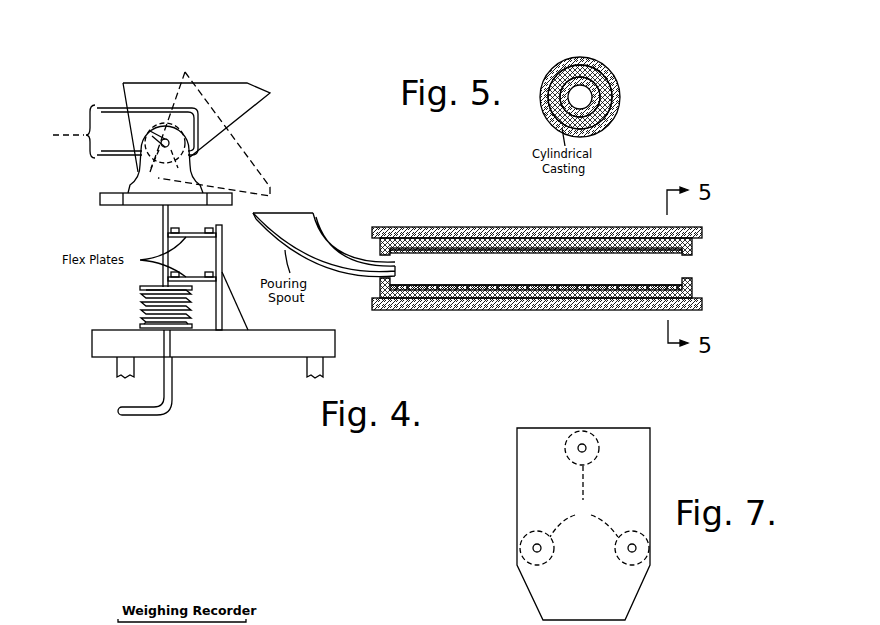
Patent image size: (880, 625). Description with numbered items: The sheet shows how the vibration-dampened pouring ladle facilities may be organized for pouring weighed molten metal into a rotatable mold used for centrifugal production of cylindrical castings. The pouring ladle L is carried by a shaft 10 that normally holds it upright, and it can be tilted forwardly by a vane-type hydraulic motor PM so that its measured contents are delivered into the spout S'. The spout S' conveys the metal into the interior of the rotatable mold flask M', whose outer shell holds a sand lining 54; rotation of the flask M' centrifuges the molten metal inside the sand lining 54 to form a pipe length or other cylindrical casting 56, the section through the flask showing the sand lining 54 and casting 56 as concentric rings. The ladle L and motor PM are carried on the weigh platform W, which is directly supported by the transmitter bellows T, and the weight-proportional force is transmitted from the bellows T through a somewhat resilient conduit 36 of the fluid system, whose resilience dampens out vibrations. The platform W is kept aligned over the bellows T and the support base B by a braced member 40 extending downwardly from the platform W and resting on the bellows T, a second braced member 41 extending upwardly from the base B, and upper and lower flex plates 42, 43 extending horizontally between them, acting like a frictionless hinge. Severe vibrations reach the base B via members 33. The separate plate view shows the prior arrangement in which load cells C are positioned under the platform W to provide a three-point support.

In FIG. 4, the pouring ladle L is at (247, 83).
In FIG. 4, the vane-type hydraulic motor PM is at (135, 136).
In FIG. 4, the shaft 10 is at (165, 158).
In FIG. 4, the weigh platform W is at (100, 197).
In FIG. 7, the weigh platform W is at (517, 515).
In FIG. 4, the braced member 40 is at (162, 224).
In FIG. 4, the second braced member 41 is at (222, 247).
In FIG. 4, the upper flex plate 42 is at (197, 221).
In FIG. 4, the lower flex plate 43 is at (200, 281).
In FIG. 4, the transmitter bellows T is at (147, 307).
In FIG. 4, the support base B is at (92, 345).
In FIG. 4, the members 33 is at (117, 368).
In FIG. 4, the conduit 36 is at (173, 378).
In FIG. 4, the spout S' is at (324, 225).
In FIG. 4, the rotatable mold flask M' is at (537, 264).
In FIG. 5, the rotatable mold flask M' is at (580, 82).
In FIG. 4, the sand lining 54 is at (597, 237).
In FIG. 5, the sand lining 54 is at (617, 83).
In FIG. 4, the cylindrical casting 56 is at (628, 248).
In FIG. 5, the cylindrical casting 56 is at (602, 123).
In FIG. 7, the load cells C is at (584, 498).